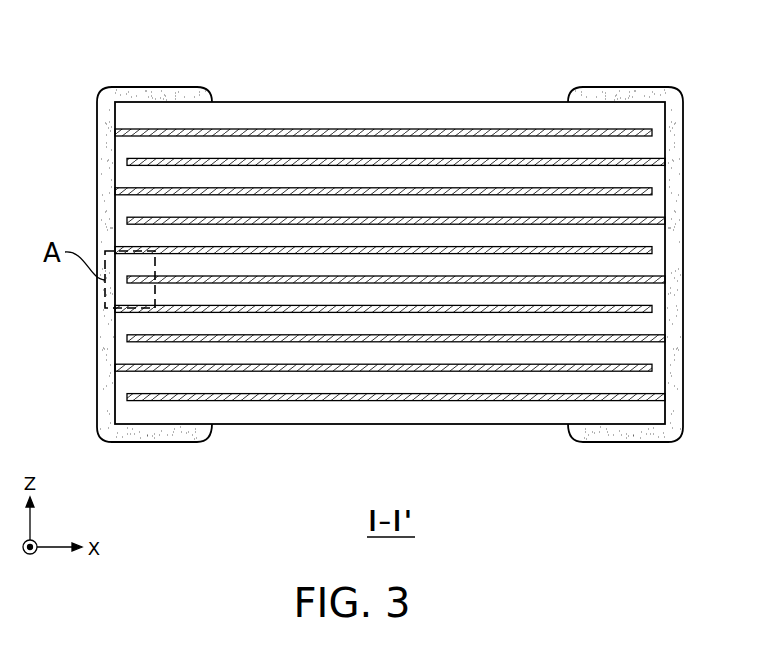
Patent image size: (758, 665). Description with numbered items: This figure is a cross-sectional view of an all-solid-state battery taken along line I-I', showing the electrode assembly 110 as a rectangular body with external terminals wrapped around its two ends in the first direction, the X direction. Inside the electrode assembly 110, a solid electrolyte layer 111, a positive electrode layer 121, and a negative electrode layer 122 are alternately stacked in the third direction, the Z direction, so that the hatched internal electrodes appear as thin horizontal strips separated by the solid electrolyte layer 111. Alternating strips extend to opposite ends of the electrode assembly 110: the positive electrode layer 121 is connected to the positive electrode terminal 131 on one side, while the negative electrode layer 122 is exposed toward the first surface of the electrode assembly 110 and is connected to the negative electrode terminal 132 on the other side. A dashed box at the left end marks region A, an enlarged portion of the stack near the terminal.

The electrode assembly 110 is at (371, 102).
The solid electrolyte layer 111 is at (472, 352).
The positive electrode layer 121 is at (367, 367).
The negative electrode layer 122 is at (327, 340).
The positive electrode terminal 131 is at (152, 89).
The negative electrode terminal 132 is at (627, 89).